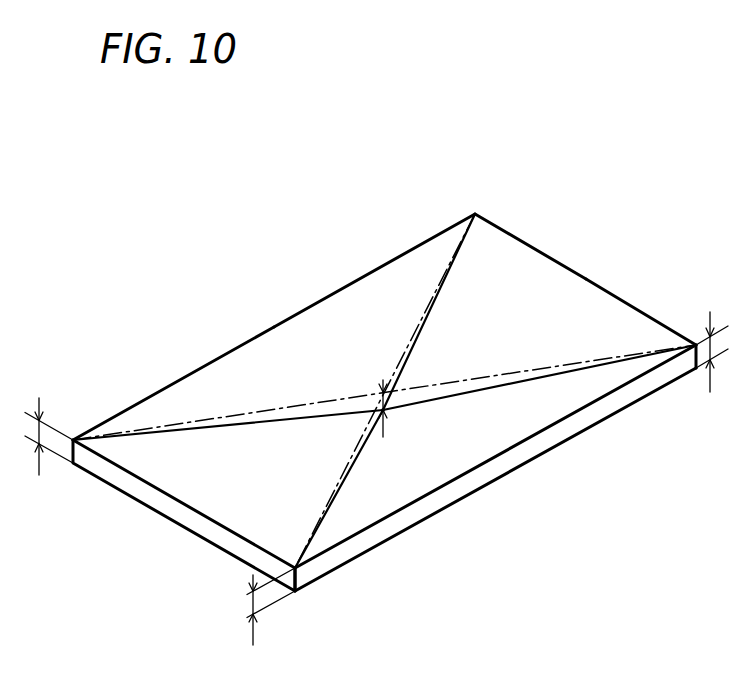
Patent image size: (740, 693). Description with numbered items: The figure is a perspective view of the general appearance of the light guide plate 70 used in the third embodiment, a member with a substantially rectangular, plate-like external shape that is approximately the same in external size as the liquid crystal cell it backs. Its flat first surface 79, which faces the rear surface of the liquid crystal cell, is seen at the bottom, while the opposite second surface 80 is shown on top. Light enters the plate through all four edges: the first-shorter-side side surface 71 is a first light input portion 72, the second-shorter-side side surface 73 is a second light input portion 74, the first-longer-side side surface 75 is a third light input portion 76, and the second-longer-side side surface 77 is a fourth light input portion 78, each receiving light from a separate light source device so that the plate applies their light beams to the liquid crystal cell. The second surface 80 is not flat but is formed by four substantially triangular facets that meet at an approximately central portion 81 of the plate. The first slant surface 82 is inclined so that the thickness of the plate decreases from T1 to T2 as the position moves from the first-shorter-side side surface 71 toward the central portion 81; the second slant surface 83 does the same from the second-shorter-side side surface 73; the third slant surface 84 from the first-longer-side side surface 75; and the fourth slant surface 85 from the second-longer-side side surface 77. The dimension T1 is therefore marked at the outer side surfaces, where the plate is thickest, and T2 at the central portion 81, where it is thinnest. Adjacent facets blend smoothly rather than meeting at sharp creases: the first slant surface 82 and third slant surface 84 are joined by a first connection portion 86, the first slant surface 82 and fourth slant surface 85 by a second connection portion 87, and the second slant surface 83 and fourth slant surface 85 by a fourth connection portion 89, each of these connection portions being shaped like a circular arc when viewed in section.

The light guide plate 70 is at (237, 268).
The first-shorter-side side surface 71 is at (133, 500).
The first light input portion 72 is at (185, 515).
The second-shorter-side side surface 73 is at (543, 253).
The second light input portion 74 is at (598, 285).
The first-longer-side side surface 75 is at (483, 475).
The third light input portion 76 is at (562, 430).
The second-longer-side side surface 77 is at (262, 332).
The fourth light input portion 78 is at (350, 280).
The first surface 79 is at (405, 535).
The second surface 80 is at (232, 388).
The approximately central portion 81 is at (387, 413).
The first slant surface 82 is at (288, 490).
The second slant surface 83 is at (493, 345).
The third slant surface 84 is at (457, 440).
The fourth slant surface 85 is at (357, 367).
The first connection portion 86 is at (352, 472).
The second connection portion 87 is at (288, 420).
The fourth connection portion 89 is at (407, 370).
The thickness at side surfaces T1 is at (376, 494).
The thickness at central portion T2 is at (384, 427).